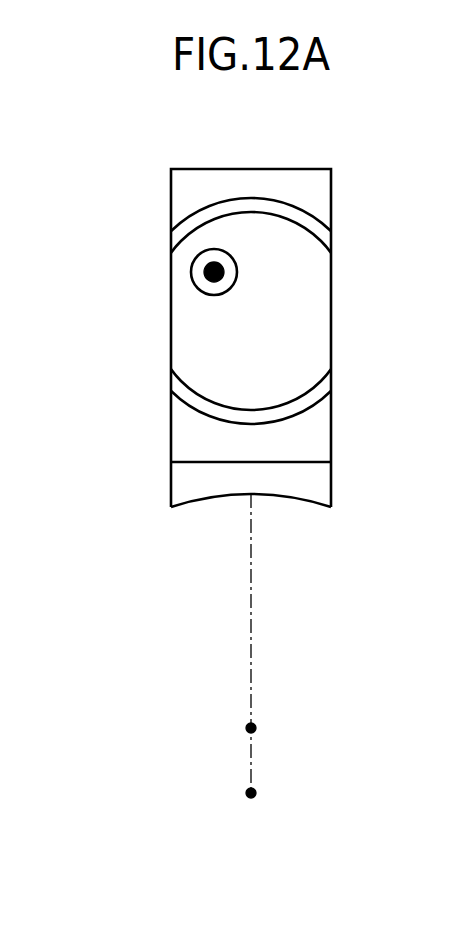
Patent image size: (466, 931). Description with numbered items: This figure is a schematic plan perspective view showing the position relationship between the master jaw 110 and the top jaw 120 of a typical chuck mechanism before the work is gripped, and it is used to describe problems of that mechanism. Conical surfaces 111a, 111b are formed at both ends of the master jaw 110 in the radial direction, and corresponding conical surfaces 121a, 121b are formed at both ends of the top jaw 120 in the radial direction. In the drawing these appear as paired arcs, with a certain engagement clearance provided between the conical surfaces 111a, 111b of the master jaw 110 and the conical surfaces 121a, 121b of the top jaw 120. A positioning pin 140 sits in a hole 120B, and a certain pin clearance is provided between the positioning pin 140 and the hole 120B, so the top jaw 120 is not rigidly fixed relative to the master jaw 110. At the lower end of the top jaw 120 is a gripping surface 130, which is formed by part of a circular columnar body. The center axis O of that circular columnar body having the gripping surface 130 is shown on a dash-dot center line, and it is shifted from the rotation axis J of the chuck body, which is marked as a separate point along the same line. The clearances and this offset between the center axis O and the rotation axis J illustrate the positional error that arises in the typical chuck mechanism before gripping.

The master jaw 110 is at (320, 427).
The top jaw 120 is at (320, 475).
The gripping surface 130 is at (293, 497).
The conical surface 121b is at (292, 205).
The conical surface 111b is at (296, 228).
The conical surface 111a is at (202, 395).
The conical surface 121a is at (205, 412).
The hole 120B is at (198, 253).
The positioning pin 140 is at (214, 272).
The center axis O is at (258, 726).
The rotation axis J is at (247, 795).